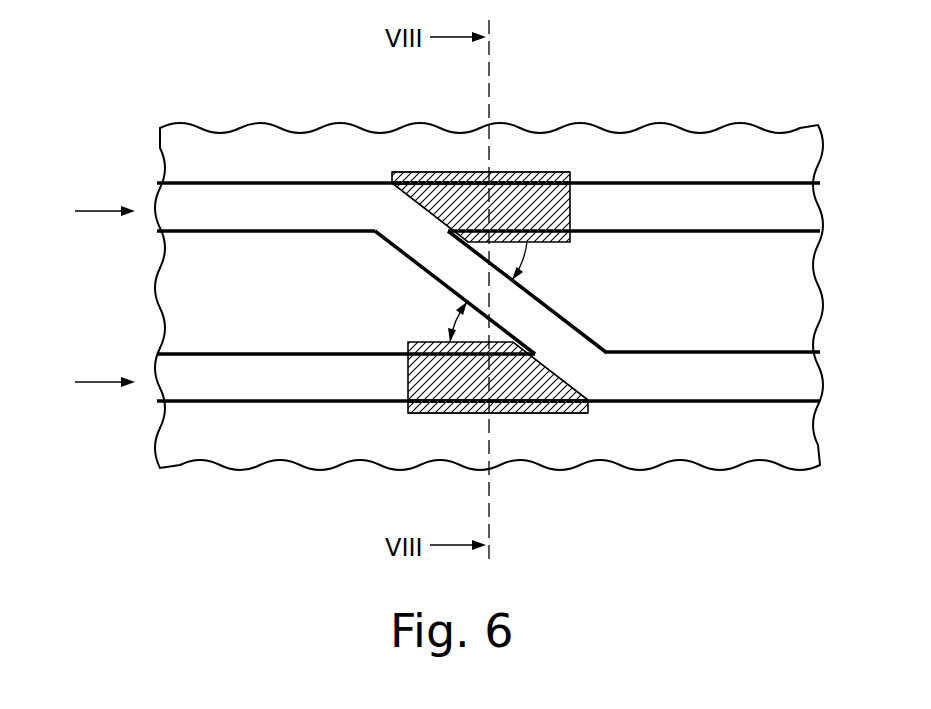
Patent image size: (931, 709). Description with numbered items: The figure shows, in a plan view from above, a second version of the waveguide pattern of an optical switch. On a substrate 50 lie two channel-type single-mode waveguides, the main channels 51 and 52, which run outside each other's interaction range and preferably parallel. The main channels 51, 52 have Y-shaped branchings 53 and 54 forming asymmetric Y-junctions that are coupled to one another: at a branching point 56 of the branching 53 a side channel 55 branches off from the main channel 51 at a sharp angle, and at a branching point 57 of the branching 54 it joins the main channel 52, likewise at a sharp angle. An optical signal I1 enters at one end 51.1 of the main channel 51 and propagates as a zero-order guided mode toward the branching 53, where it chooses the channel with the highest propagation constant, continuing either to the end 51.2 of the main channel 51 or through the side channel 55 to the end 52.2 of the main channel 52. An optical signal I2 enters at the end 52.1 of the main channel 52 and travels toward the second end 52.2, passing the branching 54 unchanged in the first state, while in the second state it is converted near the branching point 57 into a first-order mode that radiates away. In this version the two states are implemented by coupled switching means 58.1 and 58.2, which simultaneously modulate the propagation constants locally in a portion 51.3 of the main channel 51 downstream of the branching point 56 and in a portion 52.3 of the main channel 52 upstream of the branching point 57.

The substrate 50 is at (762, 118).
The main channel 51 is at (666, 205).
The end of main channel 51 51.1 is at (211, 208).
The end of main channel 51 51.2 is at (762, 205).
The portion of main channel 51 51.3 is at (450, 213).
The main channel 52 is at (307, 378).
The end of main channel 52 52.1 is at (210, 378).
The second end of main channel 52 52.2 is at (762, 378).
The portion of main channel 52 52.3 is at (530, 377).
The Y-shaped branching 53 is at (408, 152).
The Y-shaped branching 54 is at (570, 430).
The side channel 55 is at (505, 292).
The branching point 56 is at (447, 232).
The branching point 57 is at (536, 353).
The switching means 58.1 is at (530, 172).
The switching means 58.2 is at (449, 413).
The optical signal I1 is at (86, 213).
The optical signal I2 is at (86, 384).